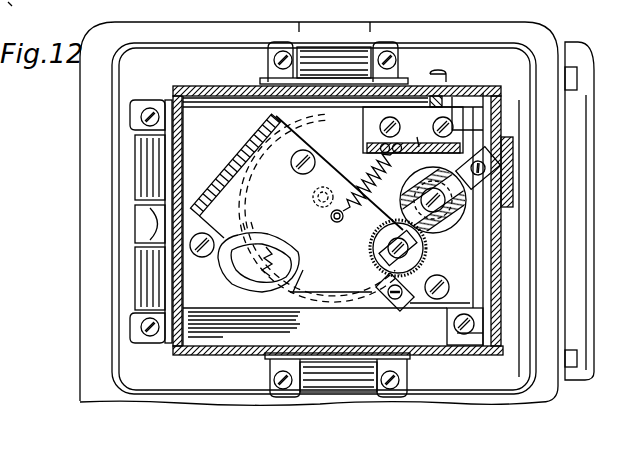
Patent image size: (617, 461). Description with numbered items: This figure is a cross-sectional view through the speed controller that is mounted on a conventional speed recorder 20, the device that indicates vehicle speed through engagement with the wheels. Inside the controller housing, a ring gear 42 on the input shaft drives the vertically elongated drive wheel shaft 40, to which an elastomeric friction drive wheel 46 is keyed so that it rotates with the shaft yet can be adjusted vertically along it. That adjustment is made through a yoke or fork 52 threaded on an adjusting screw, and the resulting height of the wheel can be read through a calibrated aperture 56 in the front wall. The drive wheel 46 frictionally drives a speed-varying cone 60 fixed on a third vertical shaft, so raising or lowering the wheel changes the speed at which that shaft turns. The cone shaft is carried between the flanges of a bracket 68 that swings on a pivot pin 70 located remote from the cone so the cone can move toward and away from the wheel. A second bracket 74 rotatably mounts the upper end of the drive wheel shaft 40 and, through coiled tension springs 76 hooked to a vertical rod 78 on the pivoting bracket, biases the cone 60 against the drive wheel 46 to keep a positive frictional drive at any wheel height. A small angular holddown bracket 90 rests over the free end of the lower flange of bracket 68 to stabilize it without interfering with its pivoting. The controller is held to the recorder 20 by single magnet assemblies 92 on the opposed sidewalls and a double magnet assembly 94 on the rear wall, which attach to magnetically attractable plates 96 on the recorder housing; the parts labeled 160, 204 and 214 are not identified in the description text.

The speed recorder 20 is at (78, 333).
The drive wheel shaft 40 is at (461, 211).
The ring gear 42 is at (258, 262).
The friction drive wheel 46 is at (466, 204).
The yoke or fork 52 is at (485, 197).
The calibrated aperture 56 is at (512, 138).
The speed-varying cone 60 is at (425, 243).
The bracket 68 is at (235, 146).
The pivot pin 70 is at (321, 129).
The second bracket 74 is at (413, 130).
The coiled tension springs 76 is at (352, 245).
The vertical rod 78 is at (326, 210).
The holddown bracket 90 is at (382, 294).
The single magnet assemblies 92 is at (277, 46).
The double magnet assembly 94 is at (140, 238).
The magnetically attractable plates 96 is at (137, 328).
The top terminal clamp 160 is at (353, 42).
The latch 204 is at (585, 191).
The cover 214 is at (29, 11).